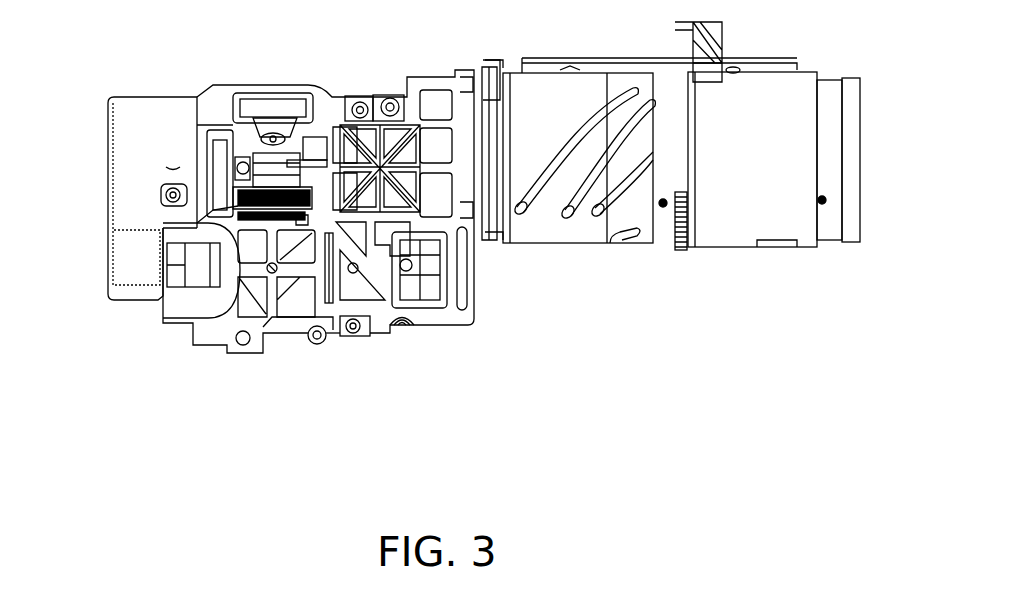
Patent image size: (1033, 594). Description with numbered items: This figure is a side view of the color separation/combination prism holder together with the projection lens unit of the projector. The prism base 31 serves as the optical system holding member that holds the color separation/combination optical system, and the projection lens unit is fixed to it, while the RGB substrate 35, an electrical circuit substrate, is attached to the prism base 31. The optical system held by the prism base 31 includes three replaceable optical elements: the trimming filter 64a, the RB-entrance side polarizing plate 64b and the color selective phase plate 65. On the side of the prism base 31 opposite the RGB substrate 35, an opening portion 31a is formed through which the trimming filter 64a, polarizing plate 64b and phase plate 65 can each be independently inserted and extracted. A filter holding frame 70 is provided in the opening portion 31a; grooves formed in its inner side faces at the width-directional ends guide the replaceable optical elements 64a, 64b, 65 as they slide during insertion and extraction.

The prism base 31 is at (222, 327).
The opening portion 31a is at (213, 210).
The RGB substrate 35 is at (166, 108).
The trimming filter 64a is at (302, 183).
The RB-entrance side polarizing plate 64b is at (340, 253).
The color selective phase plate 65 is at (230, 177).
The filter holding frame 70 is at (307, 217).